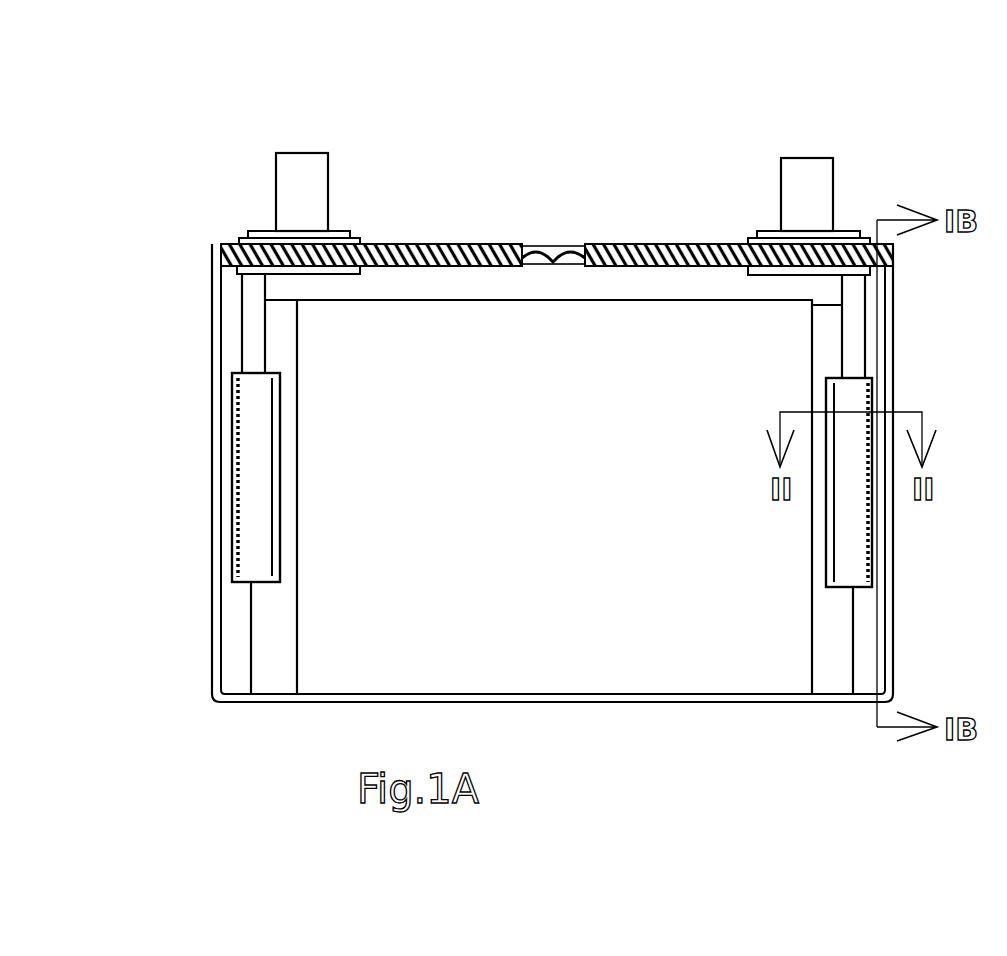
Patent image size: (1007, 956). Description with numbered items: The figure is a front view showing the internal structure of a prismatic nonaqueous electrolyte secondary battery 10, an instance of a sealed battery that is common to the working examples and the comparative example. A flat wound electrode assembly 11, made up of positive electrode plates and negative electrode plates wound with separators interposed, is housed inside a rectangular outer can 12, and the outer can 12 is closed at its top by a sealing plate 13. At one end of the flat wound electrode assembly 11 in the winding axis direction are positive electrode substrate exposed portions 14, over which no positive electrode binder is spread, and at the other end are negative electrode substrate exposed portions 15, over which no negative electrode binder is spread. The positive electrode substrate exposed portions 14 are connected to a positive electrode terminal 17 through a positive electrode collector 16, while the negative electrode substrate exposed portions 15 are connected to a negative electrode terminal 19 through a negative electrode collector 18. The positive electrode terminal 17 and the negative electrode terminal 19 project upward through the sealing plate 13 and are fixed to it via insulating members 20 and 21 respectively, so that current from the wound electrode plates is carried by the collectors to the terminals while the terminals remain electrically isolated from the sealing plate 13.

The prismatic nonaqueous electrolyte secondary battery 10 is at (175, 132).
The flat wound electrode assembly 11 is at (708, 597).
The outer can 12 is at (216, 655).
The sealing plate 13 is at (590, 244).
The positive electrode substrate exposed portions 14 is at (281, 613).
The negative electrode substrate exposed portions 15 is at (850, 650).
The positive electrode collector 16 is at (251, 424).
The positive electrode terminal 17 is at (317, 170).
The negative electrode collector 18 is at (860, 550).
The negative electrode terminal 19 is at (792, 170).
The insulating member 20 is at (358, 240).
The insulating member 21 is at (749, 243).